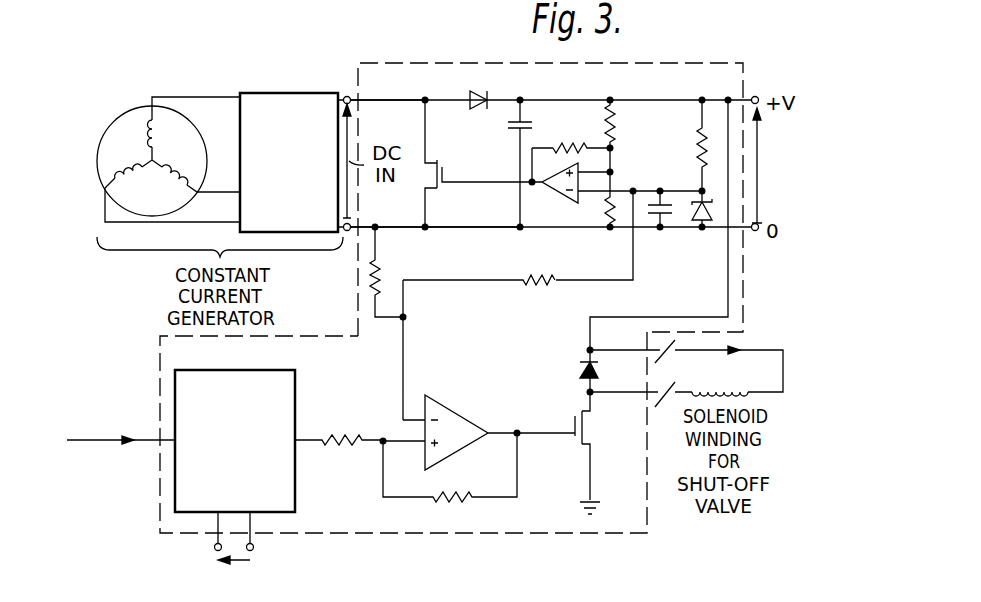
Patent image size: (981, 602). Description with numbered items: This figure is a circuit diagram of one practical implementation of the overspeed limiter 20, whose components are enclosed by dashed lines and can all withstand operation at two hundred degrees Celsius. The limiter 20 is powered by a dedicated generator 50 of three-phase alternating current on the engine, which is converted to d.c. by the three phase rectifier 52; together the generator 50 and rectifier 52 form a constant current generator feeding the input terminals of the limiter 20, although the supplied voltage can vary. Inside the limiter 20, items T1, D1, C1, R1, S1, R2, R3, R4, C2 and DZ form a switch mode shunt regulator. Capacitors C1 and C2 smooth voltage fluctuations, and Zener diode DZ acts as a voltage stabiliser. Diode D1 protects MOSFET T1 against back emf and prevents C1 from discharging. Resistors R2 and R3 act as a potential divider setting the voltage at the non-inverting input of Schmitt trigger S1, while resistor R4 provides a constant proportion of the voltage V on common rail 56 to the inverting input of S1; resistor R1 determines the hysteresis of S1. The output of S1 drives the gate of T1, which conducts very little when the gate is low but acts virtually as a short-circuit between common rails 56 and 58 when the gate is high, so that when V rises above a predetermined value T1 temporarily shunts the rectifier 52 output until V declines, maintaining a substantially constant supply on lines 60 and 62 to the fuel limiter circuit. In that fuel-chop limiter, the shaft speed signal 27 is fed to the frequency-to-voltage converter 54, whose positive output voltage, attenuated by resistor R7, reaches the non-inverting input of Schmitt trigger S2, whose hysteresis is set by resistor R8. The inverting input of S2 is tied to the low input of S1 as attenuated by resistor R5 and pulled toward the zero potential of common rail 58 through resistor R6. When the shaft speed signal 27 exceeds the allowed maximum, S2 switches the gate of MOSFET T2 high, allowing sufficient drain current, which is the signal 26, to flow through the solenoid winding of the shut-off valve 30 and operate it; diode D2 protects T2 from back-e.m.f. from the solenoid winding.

The dedicated generator 50 is at (112, 138).
The three phase rectifier 52 is at (303, 200).
The frequency-to-voltage converter 54 is at (250, 476).
The common rail 56 is at (390, 102).
The common rail 58 is at (467, 228).
The line 60 is at (730, 278).
The line 62 is at (620, 283).
The overspeed limiter 20 is at (352, 525).
The signal 26 is at (770, 350).
The shaft speed signal 27 is at (87, 442).
The shut-off valve 30 is at (737, 381).
The diode D1 is at (472, 93).
The diode D2 is at (578, 370).
The Zener diode DZ is at (704, 224).
The capacitor C1 is at (514, 131).
The capacitor C2 is at (655, 232).
The resistor R1 is at (563, 146).
The resistor R2 is at (617, 129).
The resistor R3 is at (606, 222).
The resistor R4 is at (699, 142).
The resistor R5 is at (532, 288).
The resistor R6 is at (378, 264).
The resistor R7 is at (340, 447).
The resistor R8 is at (440, 500).
The Schmitt trigger S1 is at (556, 194).
The Schmitt trigger S2 is at (452, 412).
The MOSFET T1 is at (443, 190).
The MOSFET T2 is at (586, 421).